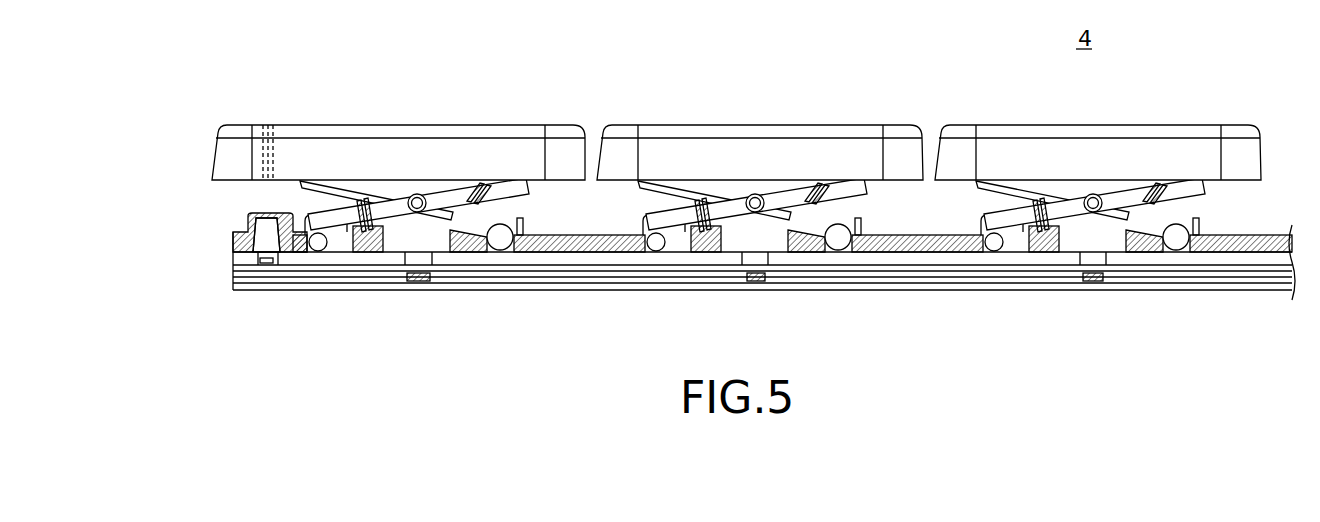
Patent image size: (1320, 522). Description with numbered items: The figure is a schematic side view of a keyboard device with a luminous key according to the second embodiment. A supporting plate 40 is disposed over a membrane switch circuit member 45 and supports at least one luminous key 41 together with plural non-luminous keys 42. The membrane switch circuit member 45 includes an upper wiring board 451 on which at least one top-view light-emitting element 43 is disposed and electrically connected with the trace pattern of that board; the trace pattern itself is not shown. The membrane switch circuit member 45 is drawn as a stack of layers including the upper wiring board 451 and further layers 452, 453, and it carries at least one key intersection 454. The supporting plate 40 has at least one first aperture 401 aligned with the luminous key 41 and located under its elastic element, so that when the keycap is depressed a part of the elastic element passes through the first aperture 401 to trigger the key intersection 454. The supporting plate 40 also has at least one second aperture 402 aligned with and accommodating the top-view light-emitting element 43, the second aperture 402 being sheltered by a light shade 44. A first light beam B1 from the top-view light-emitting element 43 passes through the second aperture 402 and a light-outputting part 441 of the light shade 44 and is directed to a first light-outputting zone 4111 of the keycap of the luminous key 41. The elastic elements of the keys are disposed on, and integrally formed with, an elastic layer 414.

The luminous key 41 is at (460, 128).
The first light-outputting zone 4111 is at (270, 124).
The non-luminous keys 42 is at (805, 128).
The elastic layer 414 is at (1222, 235).
The light shade 44 is at (240, 232).
The light-outputting part 441 is at (268, 213).
The first light beam B1 is at (267, 252).
The supporting plate 40 is at (590, 258).
The first aperture 401 is at (423, 260).
The second aperture 402 is at (256, 258).
The top-view light-emitting element 43 is at (279, 262).
The membrane switch circuit member 45 is at (1167, 281).
The upper wiring board 451 is at (853, 268).
The spacer layer 452 is at (918, 276).
The lower membrane layer 453 is at (962, 285).
The key intersection 454 is at (405, 276).